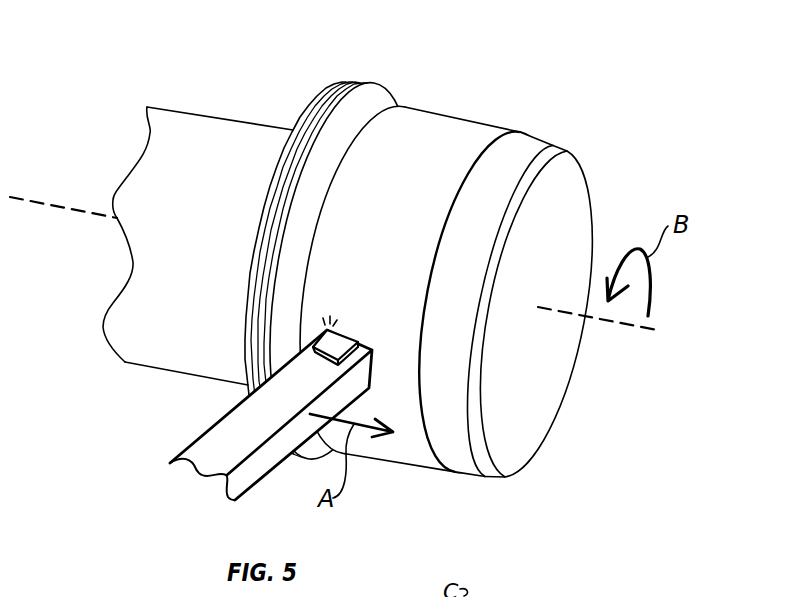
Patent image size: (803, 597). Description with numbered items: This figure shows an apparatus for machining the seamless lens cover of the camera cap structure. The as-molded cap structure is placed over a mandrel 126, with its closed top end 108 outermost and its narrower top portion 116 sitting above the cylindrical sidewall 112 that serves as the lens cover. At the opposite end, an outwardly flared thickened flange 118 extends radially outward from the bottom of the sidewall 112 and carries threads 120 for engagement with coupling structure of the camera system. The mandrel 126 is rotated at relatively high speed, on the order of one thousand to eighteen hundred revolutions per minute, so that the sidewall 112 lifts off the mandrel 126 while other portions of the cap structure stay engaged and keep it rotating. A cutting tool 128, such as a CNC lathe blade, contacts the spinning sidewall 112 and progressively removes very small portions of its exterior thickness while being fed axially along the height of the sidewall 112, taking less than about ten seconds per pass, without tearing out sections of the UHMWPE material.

The top end 108 is at (575, 222).
The sidewall 112 is at (472, 122).
The top portion 116 is at (545, 142).
The thickened flange 118 is at (387, 98).
The threads 120 is at (340, 88).
The mandrel 126 is at (237, 135).
The cutting tool 128 is at (325, 332).